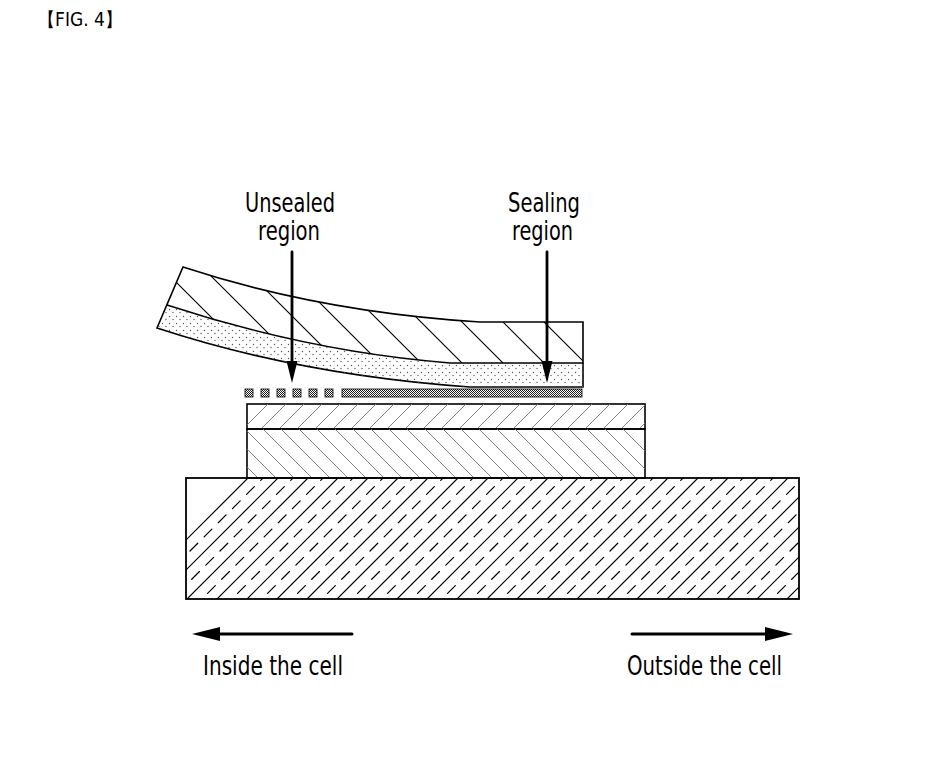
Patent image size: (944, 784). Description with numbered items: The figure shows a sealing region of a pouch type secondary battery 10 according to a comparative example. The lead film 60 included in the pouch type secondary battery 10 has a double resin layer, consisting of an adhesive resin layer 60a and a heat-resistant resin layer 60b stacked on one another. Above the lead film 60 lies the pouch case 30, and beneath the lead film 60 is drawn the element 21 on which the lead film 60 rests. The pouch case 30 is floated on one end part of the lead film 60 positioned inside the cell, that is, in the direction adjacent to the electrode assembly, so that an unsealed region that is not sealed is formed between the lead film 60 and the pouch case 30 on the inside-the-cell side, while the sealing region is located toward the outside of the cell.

The pouch type secondary battery 10 is at (465, 137).
The pouch case 30 is at (595, 323).
The lead film 60 is at (455, 544).
The adhesive resin layer 60a is at (423, 453).
The heat-resistant resin layer 60b is at (505, 417).
The lower case / base 21 is at (810, 478).